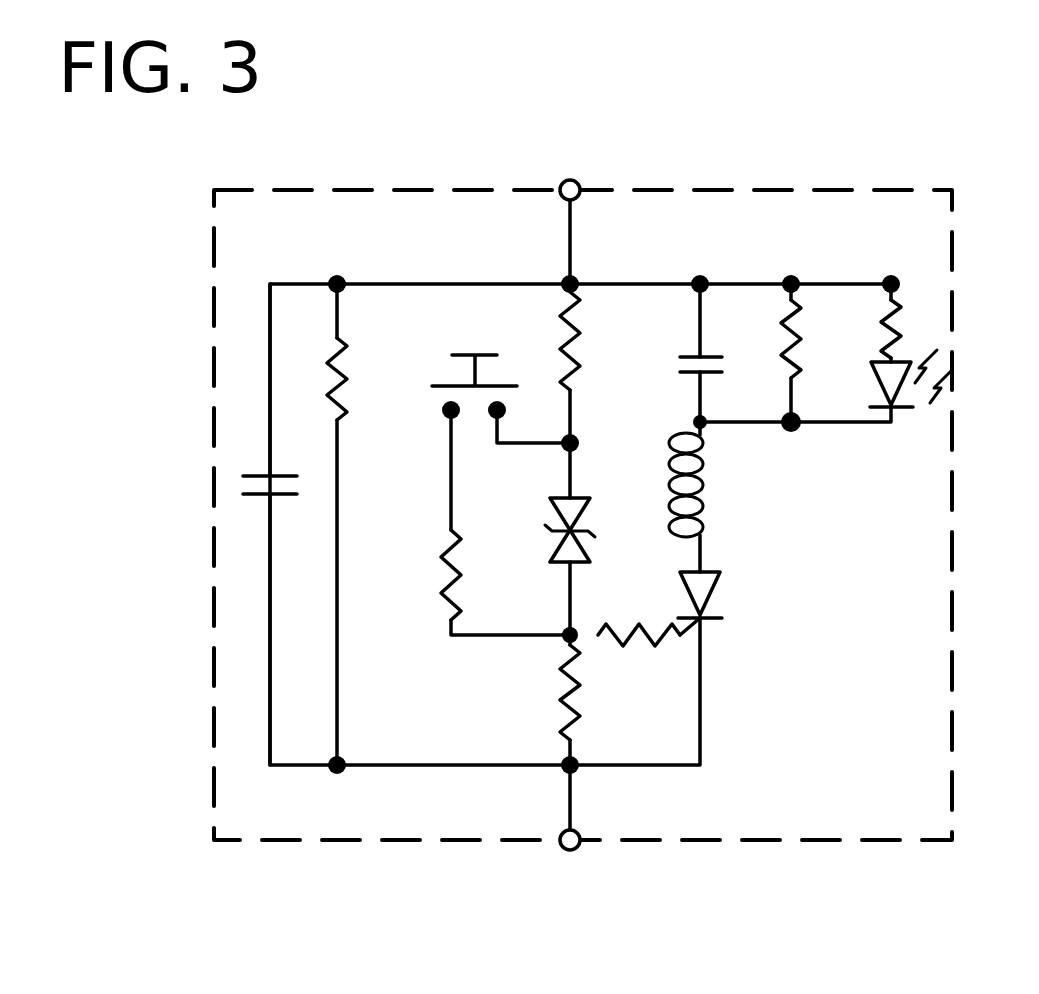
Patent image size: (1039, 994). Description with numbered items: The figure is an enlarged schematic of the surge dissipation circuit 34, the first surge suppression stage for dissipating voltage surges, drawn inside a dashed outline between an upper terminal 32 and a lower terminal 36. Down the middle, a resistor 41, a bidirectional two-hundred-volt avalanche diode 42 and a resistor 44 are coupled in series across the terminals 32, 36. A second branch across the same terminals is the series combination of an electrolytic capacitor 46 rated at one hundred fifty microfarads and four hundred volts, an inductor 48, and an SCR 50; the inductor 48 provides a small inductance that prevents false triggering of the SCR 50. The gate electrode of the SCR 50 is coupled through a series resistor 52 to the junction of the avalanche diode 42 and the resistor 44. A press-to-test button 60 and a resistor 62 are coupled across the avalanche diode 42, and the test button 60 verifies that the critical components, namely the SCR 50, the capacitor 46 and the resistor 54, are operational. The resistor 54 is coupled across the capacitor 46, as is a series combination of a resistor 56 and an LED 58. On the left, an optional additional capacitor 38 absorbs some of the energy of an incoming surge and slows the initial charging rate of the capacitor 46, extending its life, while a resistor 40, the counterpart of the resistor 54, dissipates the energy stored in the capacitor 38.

The terminal 32 is at (574, 178).
The surge dissipation circuit 34 is at (731, 186).
The terminal 36 is at (566, 850).
The capacitor 38 is at (243, 473).
The resistor 40 is at (345, 368).
The resistor 41 is at (560, 328).
The bidirectional avalanche diode 42 is at (558, 520).
The resistor 44 is at (560, 668).
The electrolytic capacitor 46 is at (690, 355).
The inductor 48 is at (705, 475).
The SCR 50 is at (718, 590).
The series resistor 52 is at (645, 648).
The resistor 54 is at (785, 345).
The resistor 56 is at (912, 365).
The LED 58 is at (878, 378).
The press-to-test button 60 is at (465, 383).
The resistor 62 is at (445, 570).